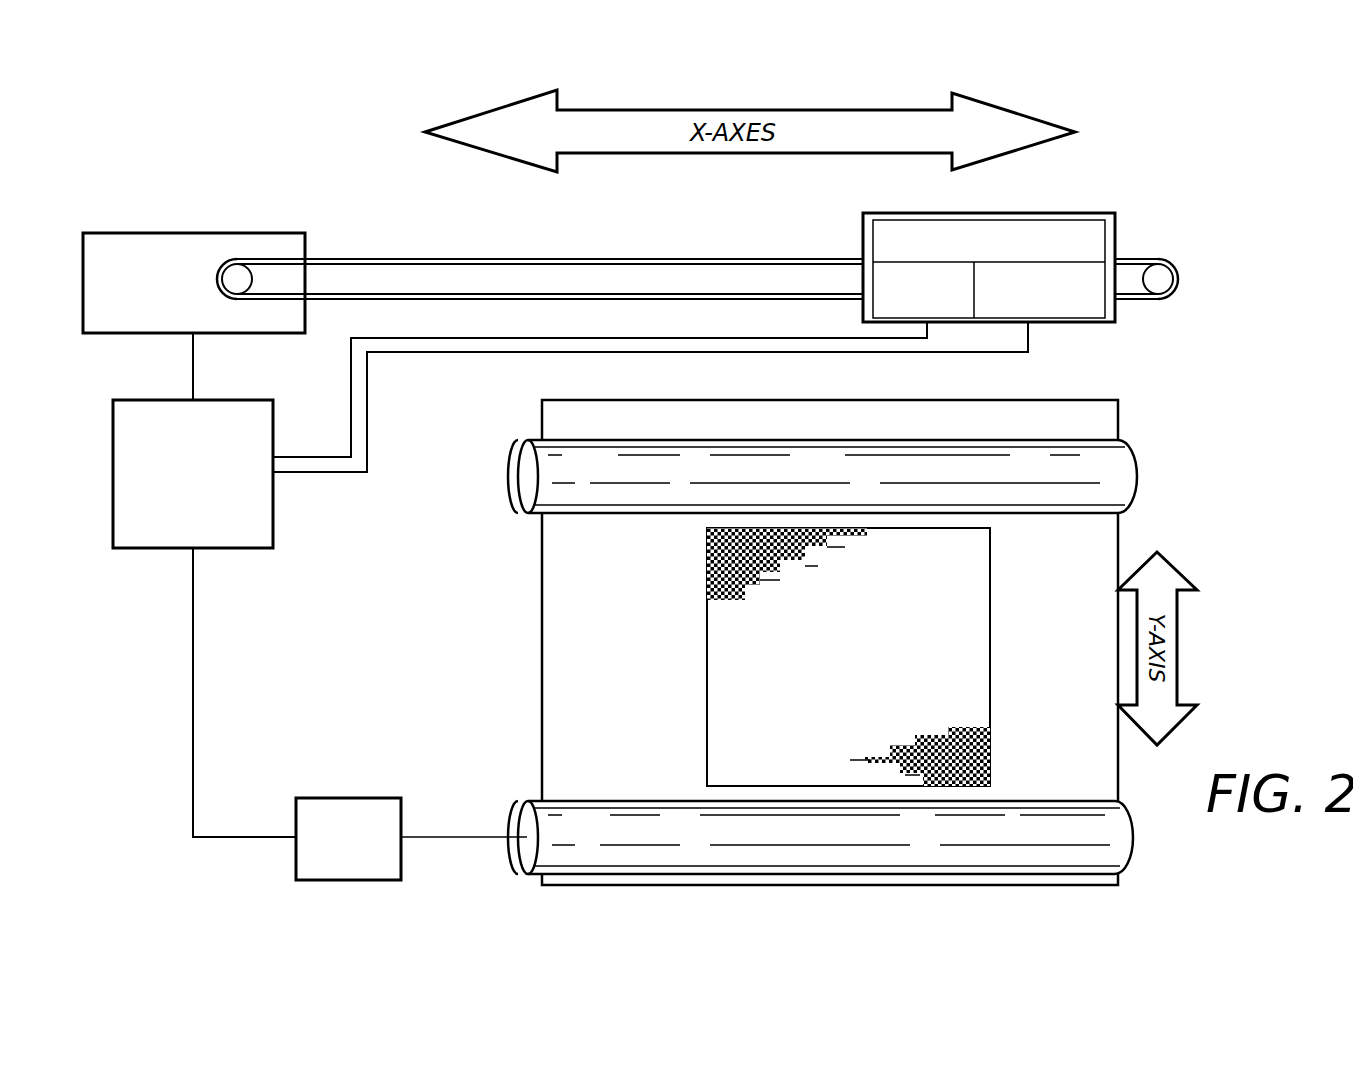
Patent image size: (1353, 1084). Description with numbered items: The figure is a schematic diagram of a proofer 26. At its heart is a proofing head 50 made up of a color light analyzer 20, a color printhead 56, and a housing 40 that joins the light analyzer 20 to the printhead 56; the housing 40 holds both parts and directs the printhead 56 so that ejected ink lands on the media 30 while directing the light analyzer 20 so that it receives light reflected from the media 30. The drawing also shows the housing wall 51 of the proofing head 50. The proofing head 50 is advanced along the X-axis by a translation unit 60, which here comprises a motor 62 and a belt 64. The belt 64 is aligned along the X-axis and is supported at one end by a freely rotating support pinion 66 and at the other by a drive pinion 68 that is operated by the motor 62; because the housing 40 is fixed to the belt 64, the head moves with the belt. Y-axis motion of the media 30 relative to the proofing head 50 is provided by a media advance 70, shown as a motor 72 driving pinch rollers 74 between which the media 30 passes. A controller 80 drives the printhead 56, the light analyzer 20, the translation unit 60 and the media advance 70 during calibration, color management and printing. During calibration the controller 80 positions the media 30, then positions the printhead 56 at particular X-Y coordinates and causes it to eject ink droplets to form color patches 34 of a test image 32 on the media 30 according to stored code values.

The color light analyzer 20 is at (1024, 305).
The proofer 26 is at (193, 762).
The media 30 is at (776, 657).
The test image 32 is at (707, 556).
The color patches 34 is at (745, 585).
The housing 40 is at (977, 235).
The proofing head 50 is at (862, 235).
The carriage housing 51 is at (880, 246).
The color printhead 56 is at (914, 305).
The translation unit 60 is at (630, 300).
The motor 62 is at (173, 233).
The belt 64 is at (428, 258).
The support pinion 66 is at (1161, 296).
The drive pinion 68 is at (236, 272).
The media advance 70 is at (732, 638).
The motor 72 is at (296, 800).
The pinch rollers 74 is at (522, 458).
The controller 80 is at (128, 441).